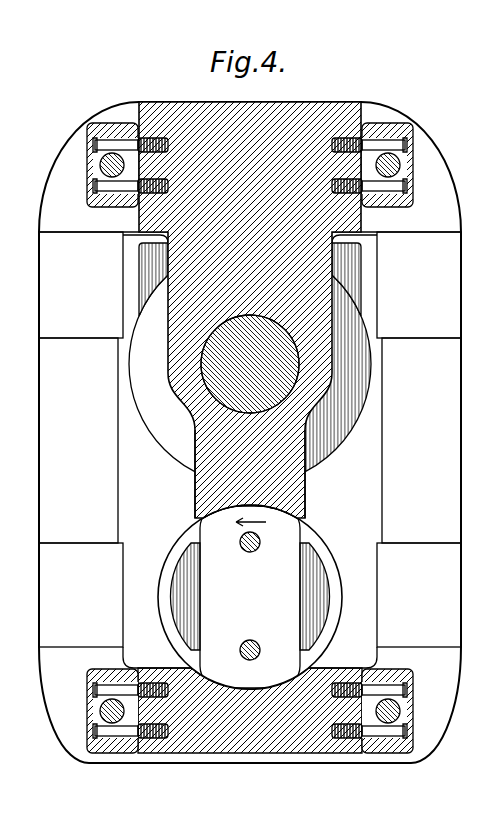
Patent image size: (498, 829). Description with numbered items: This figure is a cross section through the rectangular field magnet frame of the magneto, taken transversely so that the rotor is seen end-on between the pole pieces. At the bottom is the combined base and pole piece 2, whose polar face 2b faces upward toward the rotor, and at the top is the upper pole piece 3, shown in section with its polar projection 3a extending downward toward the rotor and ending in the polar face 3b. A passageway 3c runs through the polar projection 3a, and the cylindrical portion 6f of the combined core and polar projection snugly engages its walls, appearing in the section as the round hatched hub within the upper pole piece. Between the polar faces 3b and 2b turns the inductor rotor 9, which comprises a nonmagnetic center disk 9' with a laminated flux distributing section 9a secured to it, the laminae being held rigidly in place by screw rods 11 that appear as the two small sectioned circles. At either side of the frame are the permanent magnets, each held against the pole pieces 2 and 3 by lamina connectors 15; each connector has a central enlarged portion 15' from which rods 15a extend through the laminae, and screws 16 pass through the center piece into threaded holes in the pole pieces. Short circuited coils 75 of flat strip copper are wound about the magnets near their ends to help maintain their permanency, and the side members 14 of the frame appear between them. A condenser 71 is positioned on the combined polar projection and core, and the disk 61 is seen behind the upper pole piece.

The combined base and pole piece 2 is at (250, 729).
The polar face 2b is at (268, 682).
The upper pole piece 3 is at (213, 103).
The polar projection 3a is at (290, 482).
The polar face 3b is at (210, 508).
The passageway 3c is at (295, 406).
The cylindrical portion of the combined core and polar projection 6f is at (203, 350).
The inductor rotor 9 is at (242, 597).
The flux distributing section 9a is at (287, 545).
The center disk 9' is at (258, 596).
The screw rods 11 is at (253, 552).
The side wall of housing 14 is at (249, 440).
The lamina connectors 15 is at (248, 438).
The central enlarged portion 15' is at (247, 438).
The rods 15a is at (102, 173).
The screws 16 is at (122, 140).
The cam disc 61 is at (390, 383).
The condenser 71 is at (139, 269).
The short circuited coils 75 is at (45, 268).